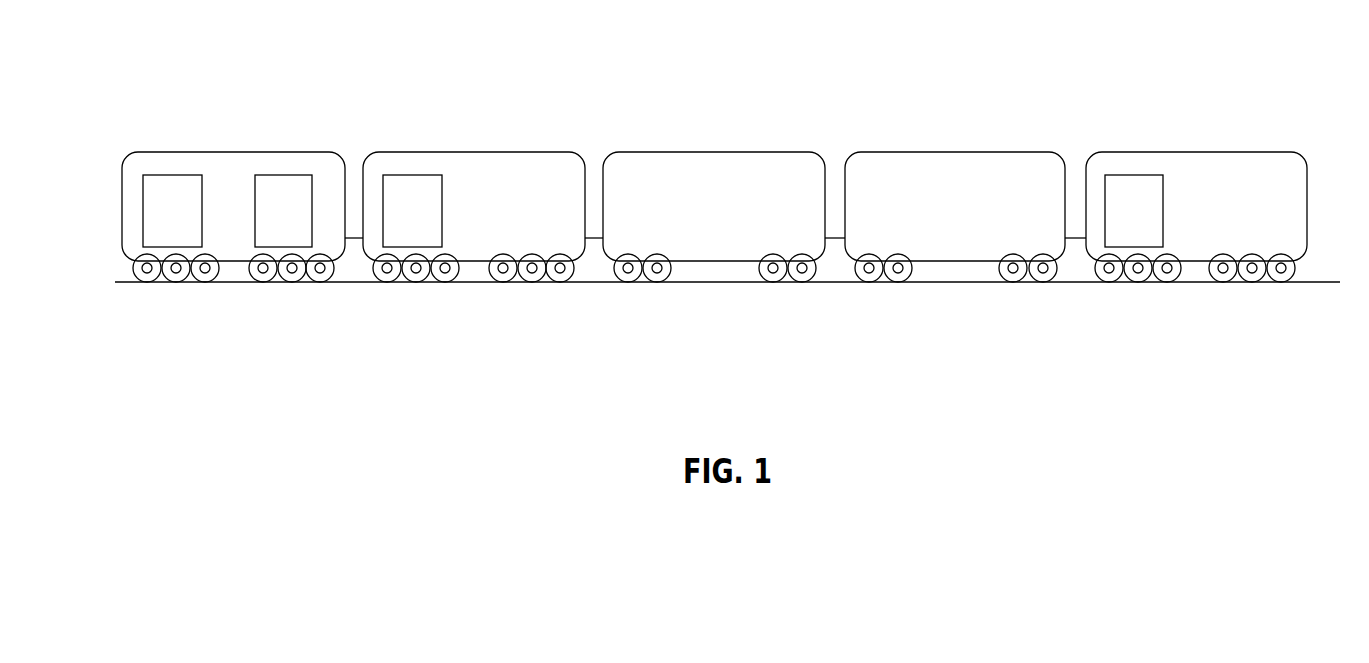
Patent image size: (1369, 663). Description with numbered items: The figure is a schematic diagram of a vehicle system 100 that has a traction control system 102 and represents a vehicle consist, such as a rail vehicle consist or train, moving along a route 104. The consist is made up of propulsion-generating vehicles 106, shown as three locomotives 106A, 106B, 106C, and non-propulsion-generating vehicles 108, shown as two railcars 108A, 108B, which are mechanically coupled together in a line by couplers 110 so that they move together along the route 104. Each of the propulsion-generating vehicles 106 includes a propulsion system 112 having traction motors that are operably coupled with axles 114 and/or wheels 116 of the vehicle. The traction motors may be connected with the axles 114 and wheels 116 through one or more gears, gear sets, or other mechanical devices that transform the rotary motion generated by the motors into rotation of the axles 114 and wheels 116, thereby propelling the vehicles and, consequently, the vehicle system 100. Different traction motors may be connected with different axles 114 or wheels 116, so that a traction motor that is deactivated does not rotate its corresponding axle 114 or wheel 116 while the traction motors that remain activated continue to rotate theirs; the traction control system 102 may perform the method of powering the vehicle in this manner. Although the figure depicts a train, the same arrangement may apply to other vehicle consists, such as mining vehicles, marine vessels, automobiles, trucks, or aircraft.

The vehicle system 100 is at (1307, 320).
The traction control system 102 is at (170, 176).
The route 104 is at (1320, 284).
The propulsion-generating vehicles 106 is at (132, 128).
The propulsion-generating vehicle 106A is at (232, 152).
The propulsion-generating vehicle 106B is at (471, 152).
The propulsion-generating vehicle 106C is at (1193, 152).
The non-propulsion-generating vehicles 108 is at (635, 128).
The non-propulsion-generating vehicle 108A is at (711, 152).
The non-propulsion-generating vehicle 108B is at (952, 152).
The couplers 110 is at (596, 240).
The propulsion systems 112 is at (282, 176).
The axles 114 is at (263, 272).
The wheels 116 is at (335, 272).